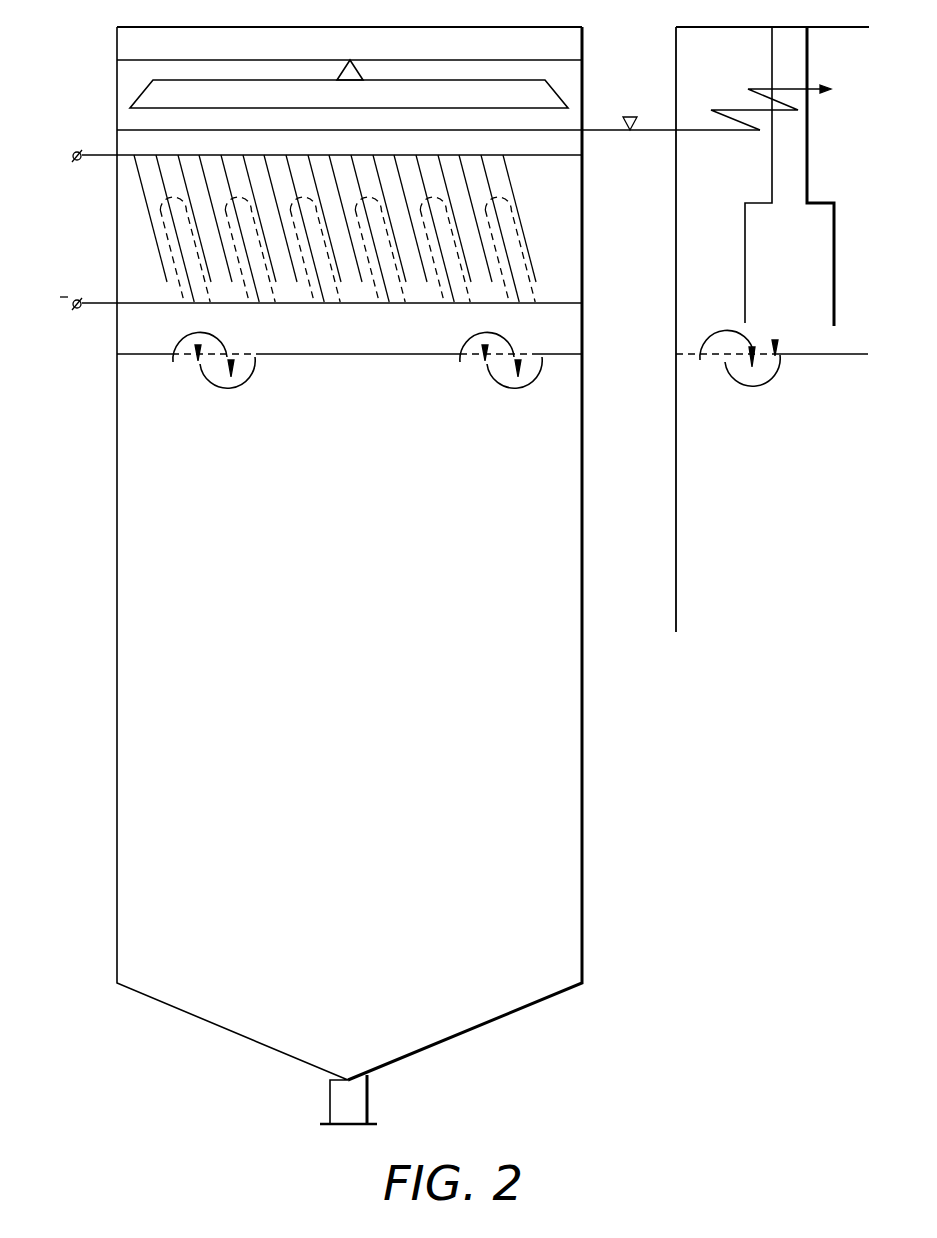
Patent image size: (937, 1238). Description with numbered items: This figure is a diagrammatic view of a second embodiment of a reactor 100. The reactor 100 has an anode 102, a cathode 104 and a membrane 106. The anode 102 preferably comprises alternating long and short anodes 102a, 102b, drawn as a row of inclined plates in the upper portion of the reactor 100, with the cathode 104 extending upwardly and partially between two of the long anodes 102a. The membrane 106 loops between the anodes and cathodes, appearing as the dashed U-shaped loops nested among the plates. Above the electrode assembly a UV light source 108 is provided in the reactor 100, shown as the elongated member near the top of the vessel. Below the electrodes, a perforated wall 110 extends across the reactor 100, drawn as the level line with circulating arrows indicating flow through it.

The reactor 100 is at (117, 428).
The anode 102 is at (99, 153).
The long anode 102a is at (203, 172).
The short anode 102b is at (163, 194).
The cathode 104 is at (300, 303).
The membrane 106 is at (160, 232).
The UV light source 108 is at (157, 97).
The perforated wall 110 is at (147, 355).